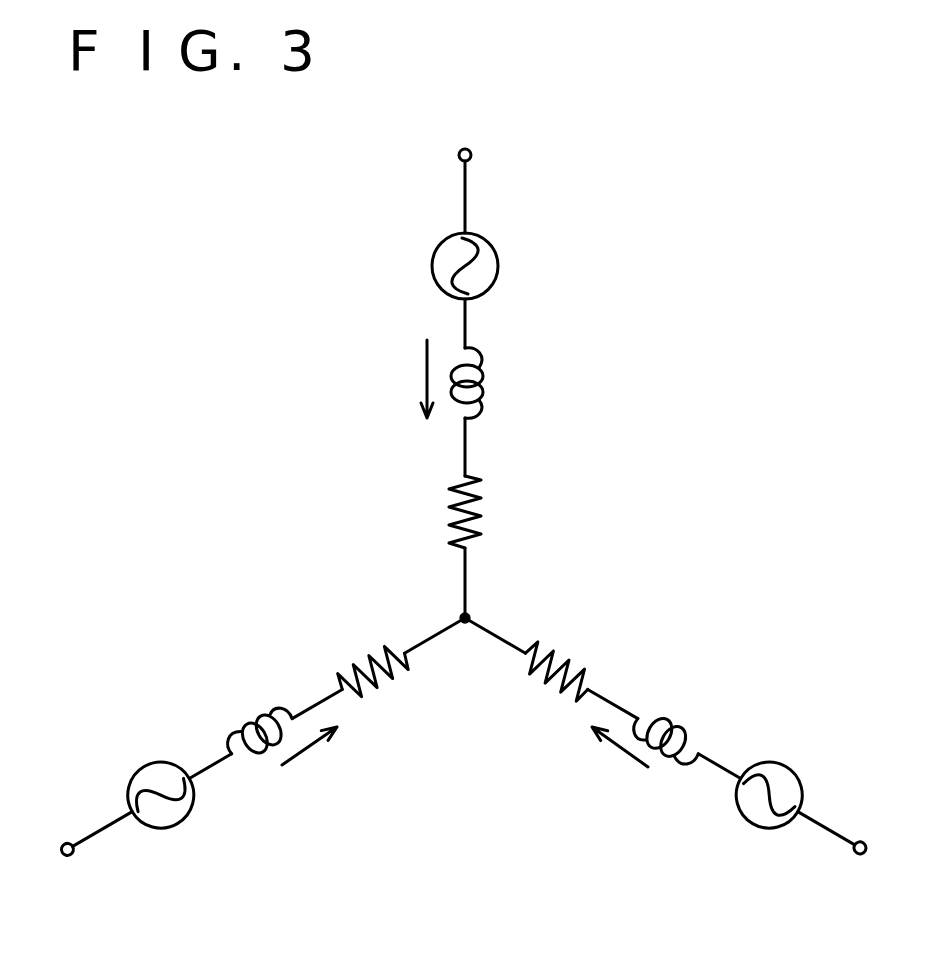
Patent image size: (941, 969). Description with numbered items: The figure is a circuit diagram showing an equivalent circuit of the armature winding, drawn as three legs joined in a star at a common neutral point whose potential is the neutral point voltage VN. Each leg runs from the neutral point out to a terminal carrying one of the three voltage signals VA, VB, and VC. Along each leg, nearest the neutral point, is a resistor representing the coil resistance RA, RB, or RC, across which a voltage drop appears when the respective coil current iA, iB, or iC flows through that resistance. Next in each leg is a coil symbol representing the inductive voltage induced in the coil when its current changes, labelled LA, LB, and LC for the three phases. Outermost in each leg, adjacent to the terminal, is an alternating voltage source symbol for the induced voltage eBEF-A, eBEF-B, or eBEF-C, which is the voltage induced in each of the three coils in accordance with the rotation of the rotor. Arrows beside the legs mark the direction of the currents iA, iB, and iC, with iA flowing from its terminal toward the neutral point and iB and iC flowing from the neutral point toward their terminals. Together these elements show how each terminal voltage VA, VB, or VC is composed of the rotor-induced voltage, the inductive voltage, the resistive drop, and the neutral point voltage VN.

The voltage signal VA is at (459, 159).
The voltage signal VB is at (854, 850).
The voltage signal VC is at (75, 849).
The neutral point voltage VN is at (481, 598).
The induced voltage eBEF-A is at (522, 274).
The induced voltage eBEF-B is at (816, 795).
The induced voltage eBEF-C is at (204, 811).
The current iA is at (405, 379).
The current iB is at (620, 767).
The current iC is at (309, 766).
The resistance RA is at (409, 512).
The resistance RB is at (566, 644).
The resistance RC is at (393, 692).
The induced voltage L(diA/dt) LA is at (552, 378).
The induced voltage L(diB/dt) LB is at (727, 691).
The induced voltage L(diC/dt) LC is at (263, 658).